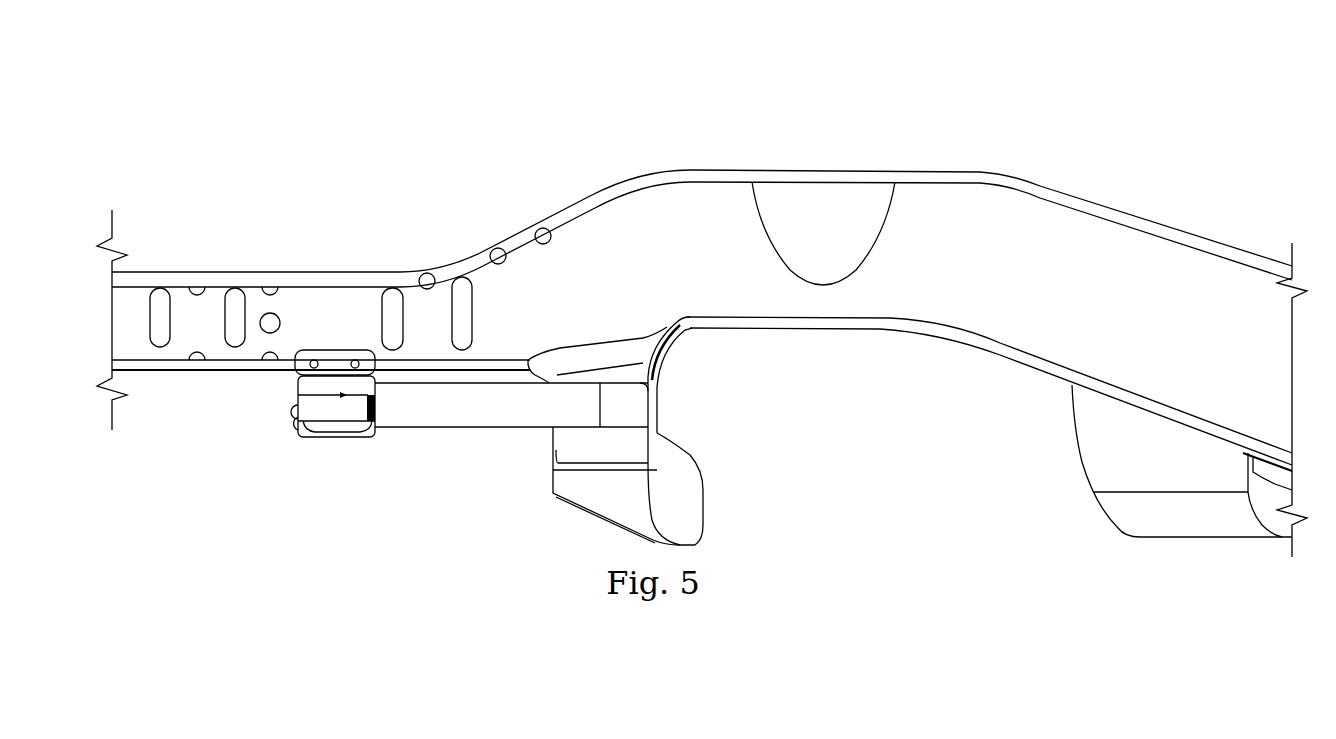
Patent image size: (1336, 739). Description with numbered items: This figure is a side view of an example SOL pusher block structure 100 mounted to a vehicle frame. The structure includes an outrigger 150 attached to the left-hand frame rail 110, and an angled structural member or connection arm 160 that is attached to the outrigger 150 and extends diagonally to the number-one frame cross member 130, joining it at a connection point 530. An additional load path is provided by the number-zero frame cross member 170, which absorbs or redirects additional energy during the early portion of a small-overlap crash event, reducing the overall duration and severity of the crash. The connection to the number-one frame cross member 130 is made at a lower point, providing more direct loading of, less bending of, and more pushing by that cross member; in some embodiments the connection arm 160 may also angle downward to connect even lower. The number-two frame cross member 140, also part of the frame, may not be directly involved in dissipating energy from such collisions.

The SOL pusher block structure 100 is at (1128, 84).
The left-hand frame rail 110 is at (702, 292).
The No. 1 frame cross member 130 is at (659, 486).
The No. 2 frame cross member 140 is at (1153, 461).
The outrigger 150 is at (295, 381).
The connection arm 160 is at (511, 433).
The No. 0 frame cross member 170 is at (327, 444).
The connection point 530 is at (677, 402).